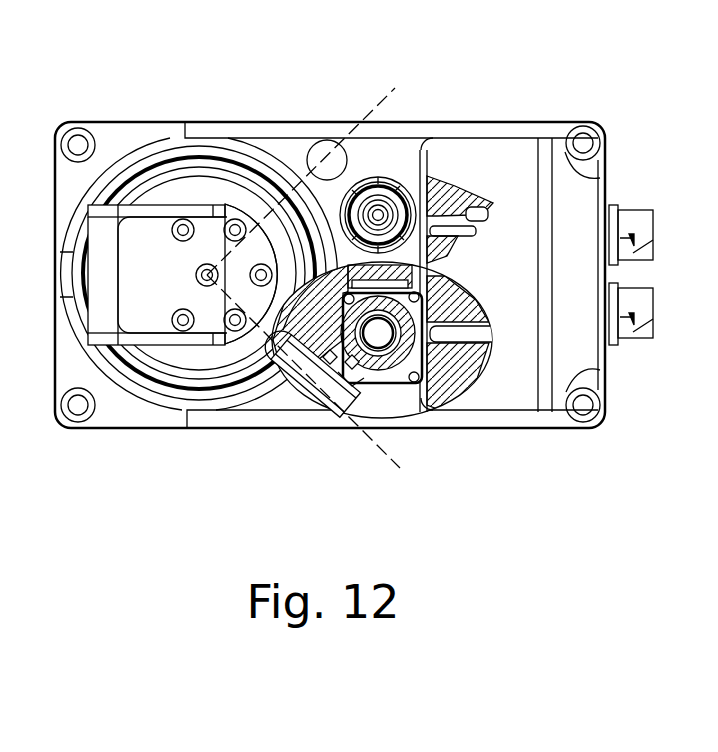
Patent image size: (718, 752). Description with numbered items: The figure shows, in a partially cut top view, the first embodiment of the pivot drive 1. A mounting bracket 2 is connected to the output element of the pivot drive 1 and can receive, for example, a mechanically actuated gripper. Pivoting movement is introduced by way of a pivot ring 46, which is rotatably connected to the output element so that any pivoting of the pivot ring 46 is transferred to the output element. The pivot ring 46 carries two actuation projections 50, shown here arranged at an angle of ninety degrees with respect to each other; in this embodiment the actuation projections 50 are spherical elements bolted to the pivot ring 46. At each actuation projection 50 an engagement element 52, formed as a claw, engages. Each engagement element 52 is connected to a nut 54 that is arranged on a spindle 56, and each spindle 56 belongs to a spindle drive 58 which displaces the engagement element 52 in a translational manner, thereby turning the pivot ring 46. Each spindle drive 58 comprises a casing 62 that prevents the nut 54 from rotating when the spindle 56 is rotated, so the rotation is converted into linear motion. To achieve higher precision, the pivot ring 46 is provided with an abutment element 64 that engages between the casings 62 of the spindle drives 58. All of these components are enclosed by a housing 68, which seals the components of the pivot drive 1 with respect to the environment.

The pivot drive 1 is at (240, 464).
The mounting bracket 2 is at (168, 340).
The pivot ring 46 is at (247, 153).
The actuation projections 50 is at (309, 152).
The engagement element 52 is at (355, 398).
The nut 54 is at (378, 382).
The spindle 56 is at (467, 297).
The spindle drive 58 is at (367, 181).
The casing 62 is at (425, 333).
The abutment element 64 is at (443, 273).
The housing 68 is at (587, 355).